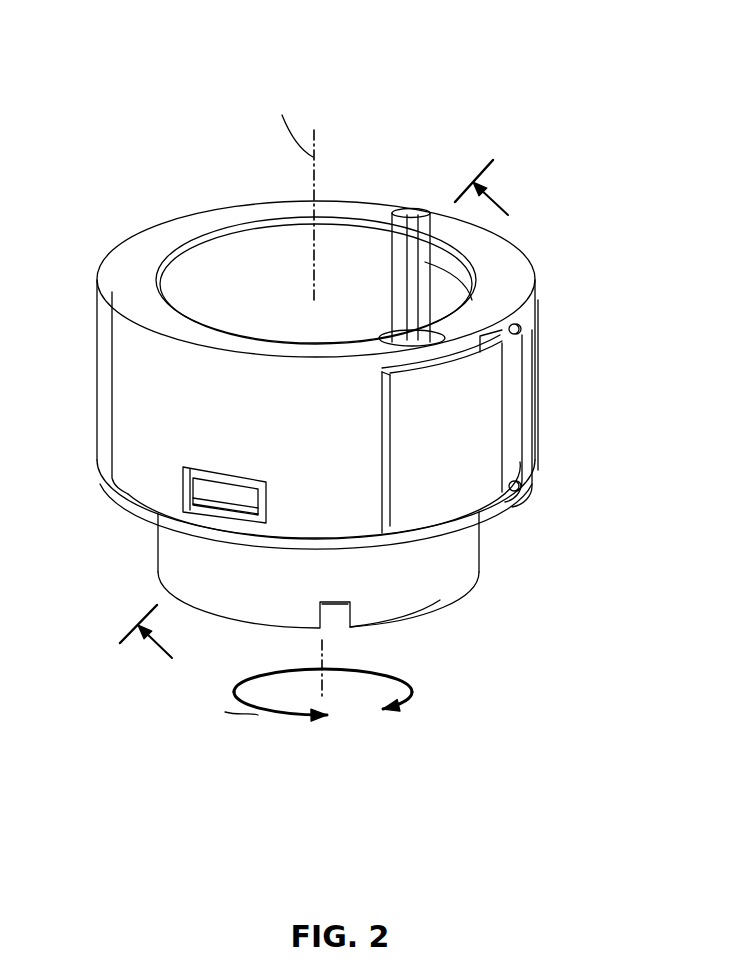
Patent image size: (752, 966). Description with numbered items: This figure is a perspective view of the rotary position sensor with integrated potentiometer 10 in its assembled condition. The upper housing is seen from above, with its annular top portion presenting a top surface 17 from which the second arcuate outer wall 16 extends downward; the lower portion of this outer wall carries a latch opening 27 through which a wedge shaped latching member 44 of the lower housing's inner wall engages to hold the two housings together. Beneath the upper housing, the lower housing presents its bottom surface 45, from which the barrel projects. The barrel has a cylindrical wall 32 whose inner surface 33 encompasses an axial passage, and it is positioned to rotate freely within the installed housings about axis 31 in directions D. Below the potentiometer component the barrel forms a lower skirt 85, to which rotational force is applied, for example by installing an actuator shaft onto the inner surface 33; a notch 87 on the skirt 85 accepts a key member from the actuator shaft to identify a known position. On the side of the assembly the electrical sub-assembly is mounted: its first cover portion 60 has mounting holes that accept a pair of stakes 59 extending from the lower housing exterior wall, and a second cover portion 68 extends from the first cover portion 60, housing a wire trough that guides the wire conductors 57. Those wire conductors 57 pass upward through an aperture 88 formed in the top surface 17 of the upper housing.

The container assembly 10 is at (192, 88).
The second arcuate outer wall 16 is at (119, 228).
The top surface 17 is at (115, 275).
The latch opening 27 is at (185, 492).
The axial direction 31 is at (331, 240).
The cylindrical wall 32 is at (226, 233).
The inner surface 33 is at (372, 242).
The wedge shaped latching member 44 is at (225, 500).
The bottom surface 45 is at (437, 532).
The wire conductors 57 is at (438, 262).
The stakes 59 is at (526, 328).
The first cover portion 60 is at (495, 405).
The second cover portion 68 is at (437, 473).
The lower skirt 85 is at (443, 608).
The notch 87 is at (350, 612).
The aperture 88 is at (450, 336).